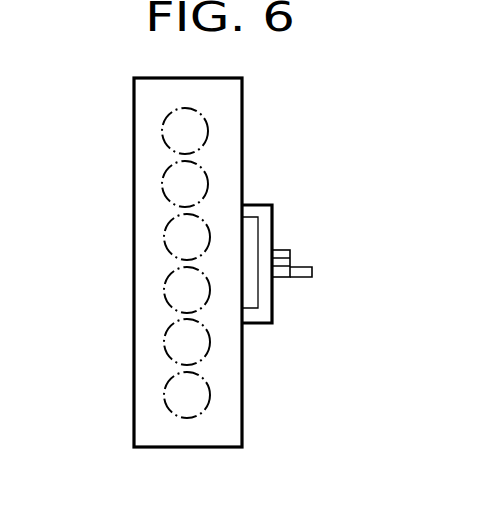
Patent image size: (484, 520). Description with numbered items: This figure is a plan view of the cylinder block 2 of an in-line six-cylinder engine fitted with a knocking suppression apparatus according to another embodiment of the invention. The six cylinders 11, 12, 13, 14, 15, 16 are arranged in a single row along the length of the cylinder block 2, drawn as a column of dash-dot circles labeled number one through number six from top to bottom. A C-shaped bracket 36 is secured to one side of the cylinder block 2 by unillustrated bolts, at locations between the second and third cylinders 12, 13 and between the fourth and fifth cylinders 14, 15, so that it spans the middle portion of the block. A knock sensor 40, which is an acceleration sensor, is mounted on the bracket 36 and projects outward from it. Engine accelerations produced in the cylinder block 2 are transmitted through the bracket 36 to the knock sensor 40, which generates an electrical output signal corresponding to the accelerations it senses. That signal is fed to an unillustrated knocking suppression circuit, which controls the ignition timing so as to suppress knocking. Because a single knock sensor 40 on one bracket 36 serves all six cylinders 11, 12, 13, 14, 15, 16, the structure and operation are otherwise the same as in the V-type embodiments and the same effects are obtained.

The cylinder block 2 is at (242, 85).
The cylinder 11 is at (208, 126).
The cylinder 12 is at (208, 180).
The cylinder 13 is at (164, 237).
The cylinder 14 is at (164, 290).
The cylinder 15 is at (164, 344).
The cylinder 16 is at (164, 396).
The C-shaped bracket 36 is at (272, 214).
The knock sensor 40 is at (290, 255).